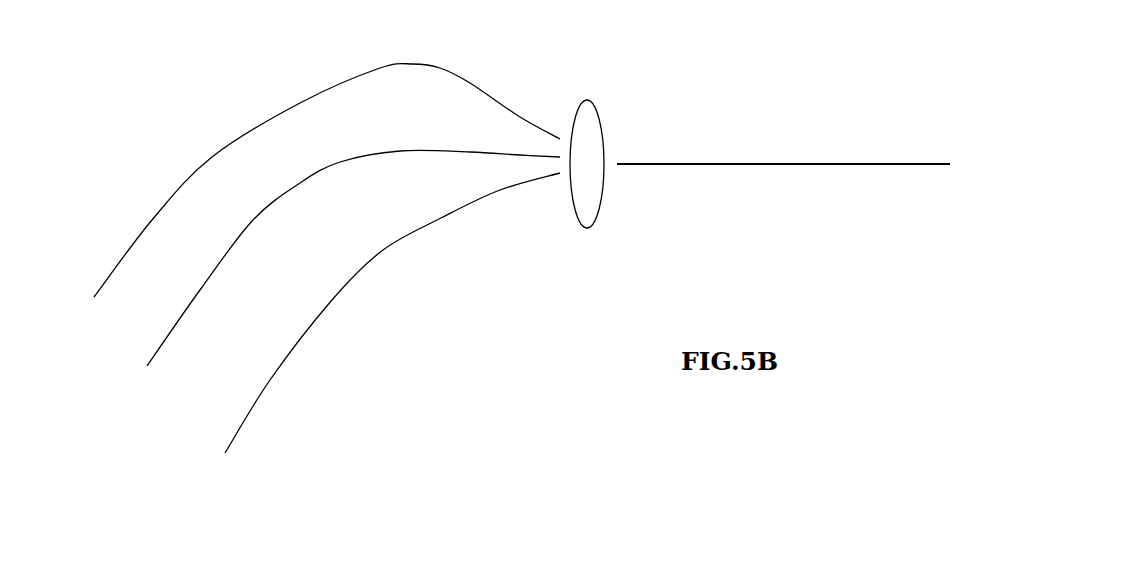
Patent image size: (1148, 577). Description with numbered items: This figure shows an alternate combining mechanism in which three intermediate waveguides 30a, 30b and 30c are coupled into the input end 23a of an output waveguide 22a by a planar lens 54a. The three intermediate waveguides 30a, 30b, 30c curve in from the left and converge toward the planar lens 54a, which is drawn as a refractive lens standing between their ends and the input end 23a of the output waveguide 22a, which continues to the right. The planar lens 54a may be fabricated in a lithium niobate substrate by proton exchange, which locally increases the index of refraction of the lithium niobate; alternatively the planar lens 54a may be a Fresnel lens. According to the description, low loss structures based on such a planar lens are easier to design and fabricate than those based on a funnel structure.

The intermediate waveguide 30a is at (210, 158).
The intermediate waveguide 30b is at (235, 233).
The intermediate waveguide 30c is at (293, 343).
The planar lens 54a is at (586, 108).
The input end 23a is at (641, 163).
The output waveguide 22a is at (910, 163).